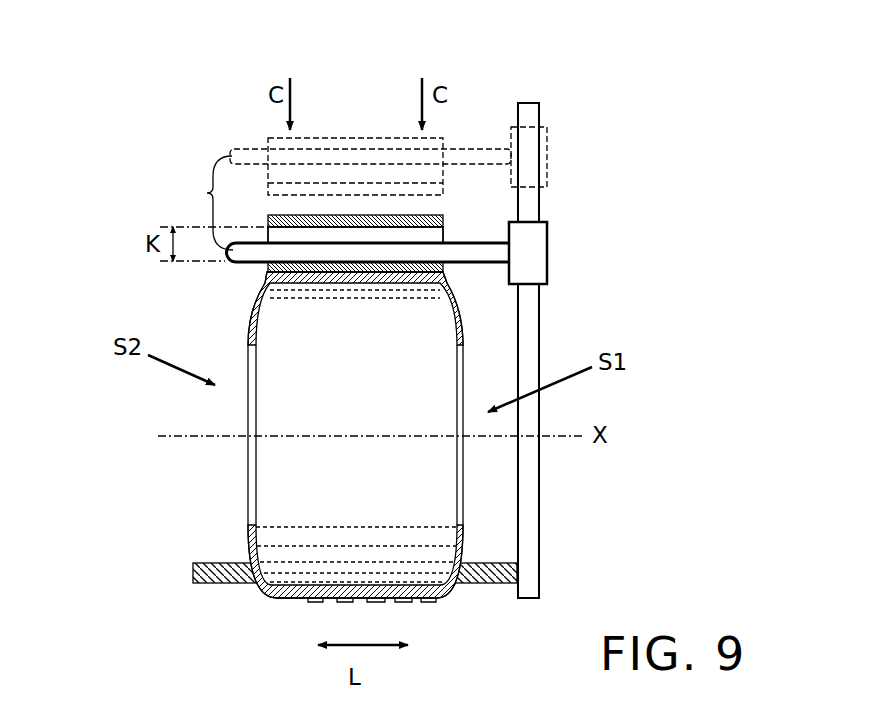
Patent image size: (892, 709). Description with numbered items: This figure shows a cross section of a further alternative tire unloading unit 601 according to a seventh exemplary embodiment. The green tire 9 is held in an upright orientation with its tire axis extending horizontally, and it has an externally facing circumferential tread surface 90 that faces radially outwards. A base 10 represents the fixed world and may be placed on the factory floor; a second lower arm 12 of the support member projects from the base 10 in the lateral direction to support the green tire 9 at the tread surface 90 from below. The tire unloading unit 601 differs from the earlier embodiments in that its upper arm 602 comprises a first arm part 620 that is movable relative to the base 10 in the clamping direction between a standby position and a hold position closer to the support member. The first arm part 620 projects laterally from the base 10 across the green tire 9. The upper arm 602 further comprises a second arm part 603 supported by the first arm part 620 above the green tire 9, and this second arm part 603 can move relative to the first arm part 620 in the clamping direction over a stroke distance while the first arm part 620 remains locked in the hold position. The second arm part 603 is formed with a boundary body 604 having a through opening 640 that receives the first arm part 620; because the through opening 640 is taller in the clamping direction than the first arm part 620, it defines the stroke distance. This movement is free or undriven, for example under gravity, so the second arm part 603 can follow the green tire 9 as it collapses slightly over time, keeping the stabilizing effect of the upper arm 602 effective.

The green tire 9 is at (325, 465).
The base 10 is at (527, 205).
The second lower arm 12 is at (485, 573).
The tread surface 90 is at (280, 598).
The tire unloading unit 601 is at (364, 149).
The upper arm 602 is at (330, 115).
The second arm part 603 is at (393, 147).
The boundary body 604 is at (293, 217).
The first arm part 620 is at (333, 205).
The through opening 640 is at (520, 243).